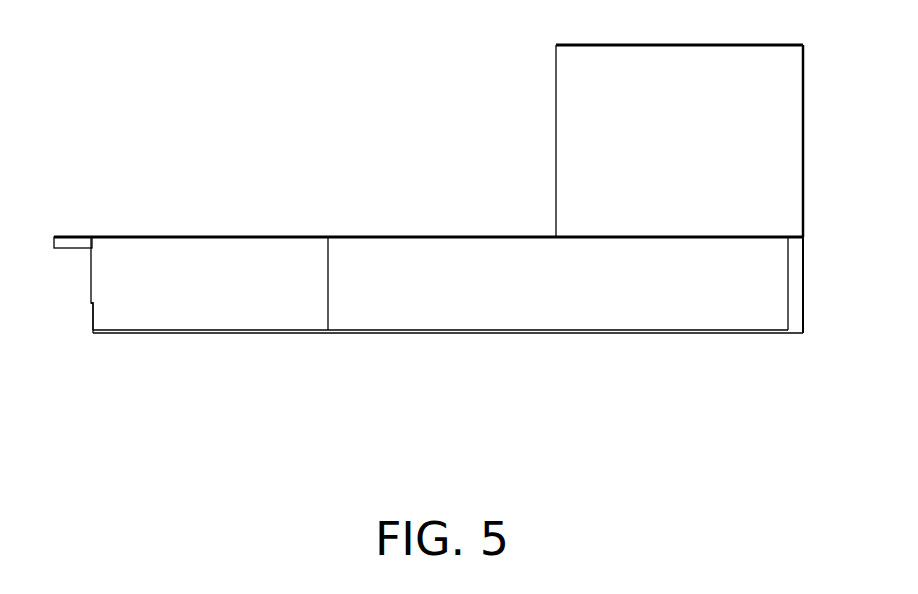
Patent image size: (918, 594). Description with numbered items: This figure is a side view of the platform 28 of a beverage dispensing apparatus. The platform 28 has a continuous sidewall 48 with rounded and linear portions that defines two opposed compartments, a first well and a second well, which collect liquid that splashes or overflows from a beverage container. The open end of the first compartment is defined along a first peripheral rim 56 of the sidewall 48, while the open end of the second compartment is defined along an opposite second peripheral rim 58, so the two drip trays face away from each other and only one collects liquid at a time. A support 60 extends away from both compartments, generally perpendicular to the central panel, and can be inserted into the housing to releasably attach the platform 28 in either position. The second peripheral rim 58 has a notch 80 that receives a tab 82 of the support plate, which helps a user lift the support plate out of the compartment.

The platform 28 is at (138, 160).
The continuous sidewall 48 is at (538, 297).
The first peripheral rim 56 is at (281, 235).
The second peripheral rim 58 is at (347, 334).
The support 60 is at (703, 141).
The notch 80 is at (91, 328).
The tab 82 is at (68, 241).